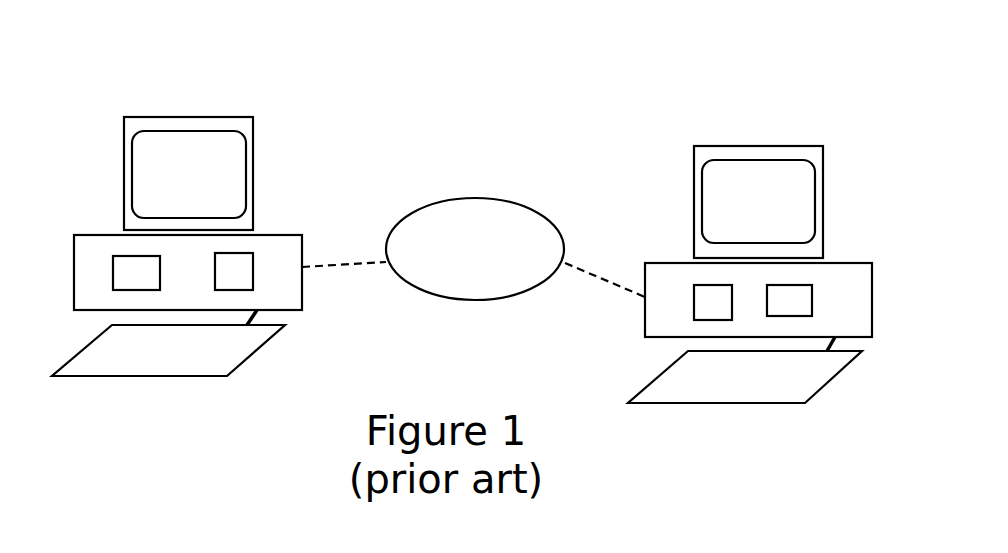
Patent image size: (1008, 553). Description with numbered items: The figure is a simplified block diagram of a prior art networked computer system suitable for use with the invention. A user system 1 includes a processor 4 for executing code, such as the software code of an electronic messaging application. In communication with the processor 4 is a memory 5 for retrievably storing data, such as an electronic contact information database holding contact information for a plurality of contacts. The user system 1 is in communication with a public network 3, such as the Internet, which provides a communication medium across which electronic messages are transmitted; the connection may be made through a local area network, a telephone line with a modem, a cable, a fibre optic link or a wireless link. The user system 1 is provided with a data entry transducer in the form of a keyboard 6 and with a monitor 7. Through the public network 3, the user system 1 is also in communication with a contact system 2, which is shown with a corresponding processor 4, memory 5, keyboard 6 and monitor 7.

The user system 1 is at (219, 88).
The contact system 2 is at (745, 125).
The public network 3 is at (475, 179).
The processor 4 is at (473, 220).
The memory 5 is at (471, 211).
The keyboard 6 is at (457, 429).
The monitor 7 is at (513, 131).